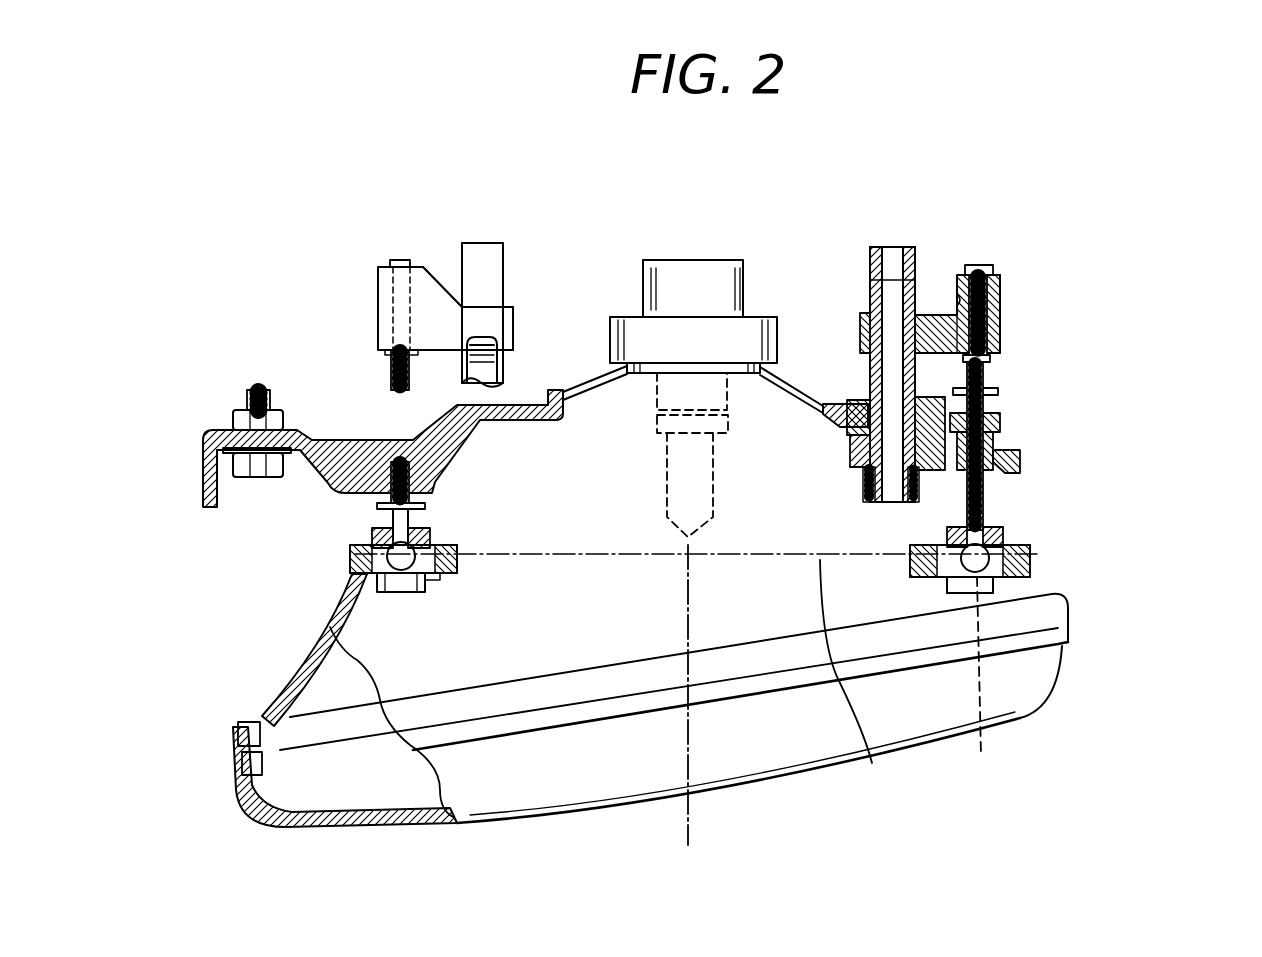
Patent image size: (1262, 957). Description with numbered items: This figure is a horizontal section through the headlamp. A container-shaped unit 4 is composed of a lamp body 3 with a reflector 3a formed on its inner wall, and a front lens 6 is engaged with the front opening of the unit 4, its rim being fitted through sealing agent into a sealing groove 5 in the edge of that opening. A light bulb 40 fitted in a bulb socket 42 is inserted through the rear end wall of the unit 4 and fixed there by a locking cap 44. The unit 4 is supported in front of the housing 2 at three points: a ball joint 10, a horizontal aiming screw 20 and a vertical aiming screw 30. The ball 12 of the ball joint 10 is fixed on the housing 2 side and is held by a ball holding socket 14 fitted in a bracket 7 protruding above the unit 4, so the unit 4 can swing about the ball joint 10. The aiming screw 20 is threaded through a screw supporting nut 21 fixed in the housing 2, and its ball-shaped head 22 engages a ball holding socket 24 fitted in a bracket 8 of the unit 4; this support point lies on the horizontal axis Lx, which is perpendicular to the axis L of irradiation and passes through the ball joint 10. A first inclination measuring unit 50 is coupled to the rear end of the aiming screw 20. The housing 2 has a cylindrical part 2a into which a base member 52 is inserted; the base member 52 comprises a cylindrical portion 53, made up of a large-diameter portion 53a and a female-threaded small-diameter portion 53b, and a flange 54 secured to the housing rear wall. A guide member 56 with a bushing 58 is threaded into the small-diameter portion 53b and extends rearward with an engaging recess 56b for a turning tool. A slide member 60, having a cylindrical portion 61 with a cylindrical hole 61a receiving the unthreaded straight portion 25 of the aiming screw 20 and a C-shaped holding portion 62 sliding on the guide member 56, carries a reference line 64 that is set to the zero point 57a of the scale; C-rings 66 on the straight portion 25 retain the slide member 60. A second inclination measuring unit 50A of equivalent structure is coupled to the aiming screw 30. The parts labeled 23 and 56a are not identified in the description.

The housing 2 is at (337, 437).
The cylindrical part 2a is at (845, 420).
The lamp body 3 is at (285, 676).
The reflector 3a is at (290, 678).
The container-shaped unit 4 is at (605, 820).
The sealing groove 5 is at (250, 776).
The front lens 6 is at (400, 822).
The bracket 7 is at (435, 580).
The bracket 8 is at (1045, 680).
The ball joint 10 is at (333, 567).
The ball 12 is at (370, 540).
The ball holding socket 14 is at (375, 590).
The horizontal aiming screw 20 is at (937, 415).
The screw supporting nut 21 is at (1005, 478).
The ball-shaped head 22 is at (1032, 550).
The screw axis 23 is at (979, 683).
The ball holding socket 24 is at (1010, 527).
The straight portion 25 is at (982, 320).
The vertical aiming screw 30 is at (392, 372).
The light bulb 40 is at (655, 465).
The bulb socket 42 is at (703, 258).
The locking cap 44 is at (622, 318).
The first inclination measuring unit 50 is at (1012, 293).
The second inclination measuring unit 50A is at (372, 242).
The base member 52 is at (855, 400).
The cylindrical portion 53 is at (1090, 443).
The large-diameter portion 53a is at (955, 432).
The small-diameter portion 53b is at (955, 466).
The flange 54 is at (952, 400).
The guide member 56 is at (478, 243).
The threaded end of tubular member 56a is at (870, 492).
The engaging recess 56b is at (890, 250).
The zero point 57a is at (482, 337).
The bushing 58 is at (855, 450).
The slide member 60 is at (372, 294).
The cylindrical portion 61 is at (997, 283).
The cylindrical hole 61a is at (957, 298).
The holding portion 62 is at (862, 320).
The reference line 64 is at (515, 360).
The C-rings 66 is at (405, 262).
The axis of irradiation L is at (690, 815).
The horizontal axis Lx is at (857, 684).